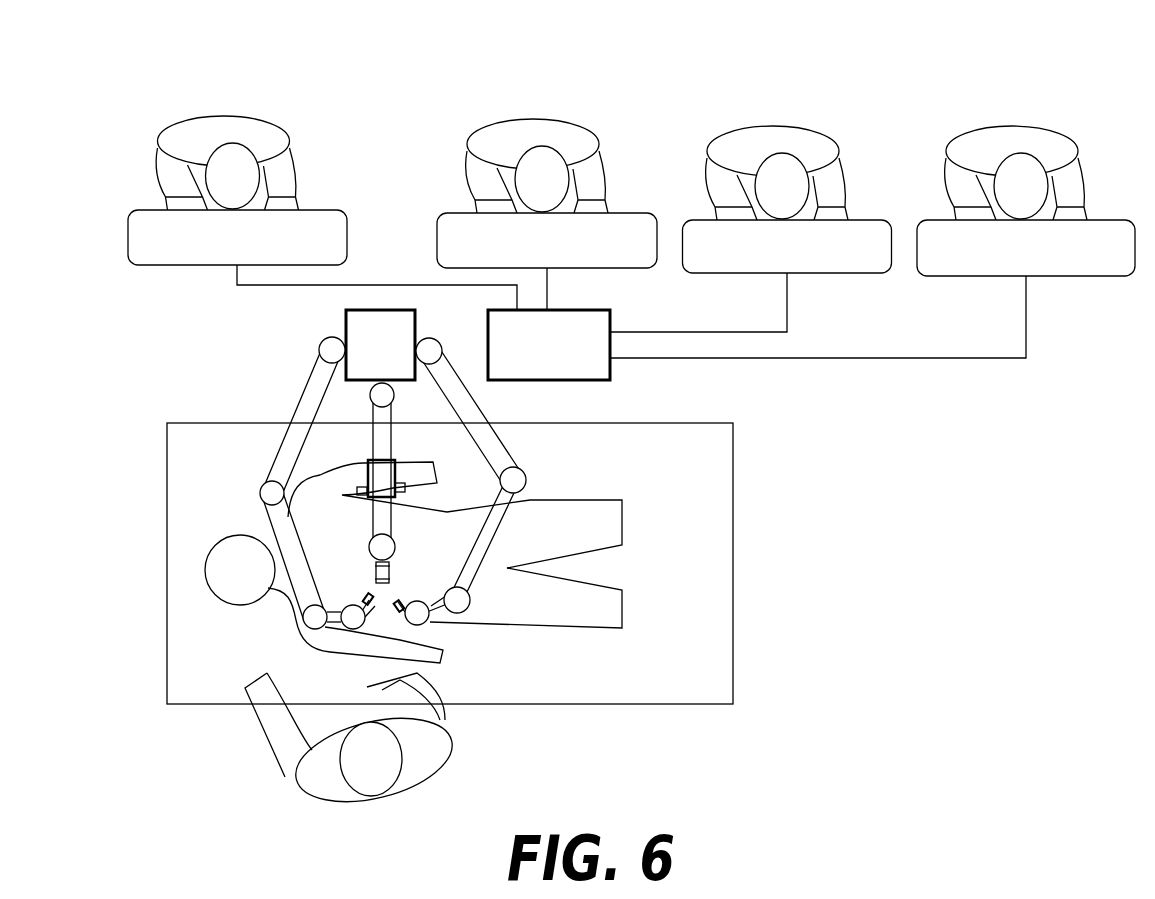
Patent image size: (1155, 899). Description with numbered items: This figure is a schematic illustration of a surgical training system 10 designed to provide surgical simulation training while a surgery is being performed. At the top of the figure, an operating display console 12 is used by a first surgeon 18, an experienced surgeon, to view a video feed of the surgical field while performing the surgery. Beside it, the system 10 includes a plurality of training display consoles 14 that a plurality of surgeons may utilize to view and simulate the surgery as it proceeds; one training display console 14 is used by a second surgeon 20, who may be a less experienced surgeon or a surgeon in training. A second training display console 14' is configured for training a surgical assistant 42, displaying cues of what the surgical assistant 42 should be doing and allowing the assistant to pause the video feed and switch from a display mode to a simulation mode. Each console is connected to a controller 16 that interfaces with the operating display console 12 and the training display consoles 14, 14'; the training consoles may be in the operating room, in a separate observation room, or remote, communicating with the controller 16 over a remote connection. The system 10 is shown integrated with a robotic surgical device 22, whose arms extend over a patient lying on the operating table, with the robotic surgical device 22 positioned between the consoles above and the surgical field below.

The surgical training system 10 is at (112, 147).
The operating display console 12 is at (237, 132).
The training display console 14 is at (786, 152).
The second training display console 14' is at (787, 148).
The controller 16 is at (560, 354).
The first surgeon 18 is at (237, 116).
The second surgeon 20 is at (537, 119).
The robotic surgical device 22 is at (393, 354).
The surgical assistant 42 is at (778, 126).